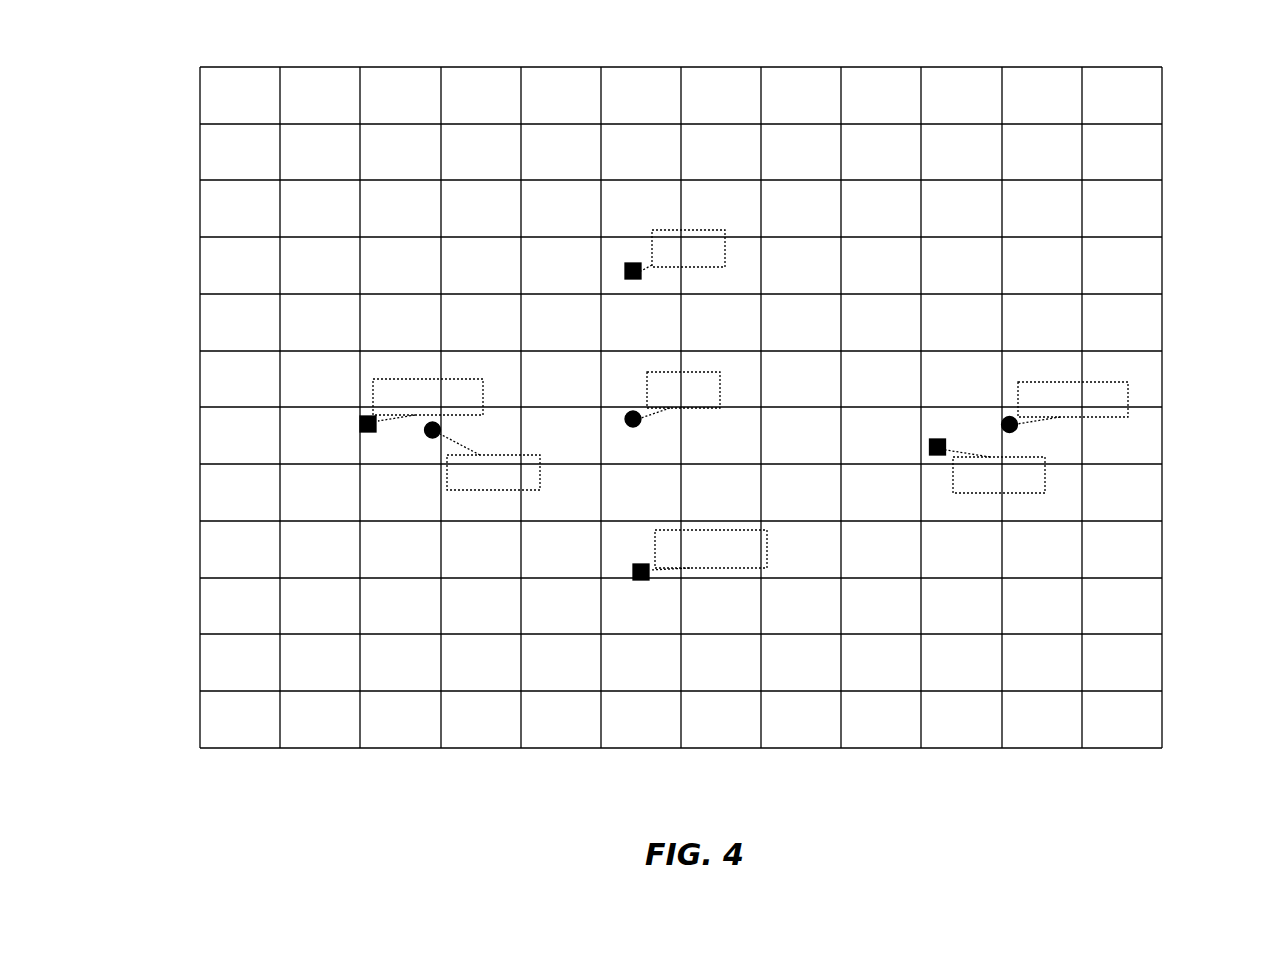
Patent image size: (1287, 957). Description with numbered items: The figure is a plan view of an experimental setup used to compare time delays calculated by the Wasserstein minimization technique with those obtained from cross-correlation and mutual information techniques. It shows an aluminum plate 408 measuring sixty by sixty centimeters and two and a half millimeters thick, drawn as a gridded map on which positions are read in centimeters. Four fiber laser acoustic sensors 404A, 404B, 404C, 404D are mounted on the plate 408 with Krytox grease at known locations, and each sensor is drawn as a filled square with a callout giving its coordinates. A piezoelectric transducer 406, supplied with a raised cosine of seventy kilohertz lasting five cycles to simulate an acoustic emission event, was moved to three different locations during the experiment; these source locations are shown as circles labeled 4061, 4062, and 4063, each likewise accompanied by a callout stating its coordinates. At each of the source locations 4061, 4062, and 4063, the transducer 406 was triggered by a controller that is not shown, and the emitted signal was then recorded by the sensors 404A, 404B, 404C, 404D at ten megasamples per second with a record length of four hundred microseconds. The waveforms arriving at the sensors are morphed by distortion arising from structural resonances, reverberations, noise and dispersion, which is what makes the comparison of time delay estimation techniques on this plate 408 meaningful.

The fiber laser acoustic sensor 404A is at (620, 271).
The fiber laser acoustic sensor 404B is at (356, 422).
The fiber laser acoustic sensor 404C is at (622, 572).
The fiber laser acoustic sensor 404D is at (921, 446).
The piezoelectric transducer 406 is at (720, 417).
The first source location 4061 is at (421, 432).
The second source location 4062 is at (633, 406).
The third source location 4063 is at (1009, 406).
The aluminum plate 408 is at (1172, 112).